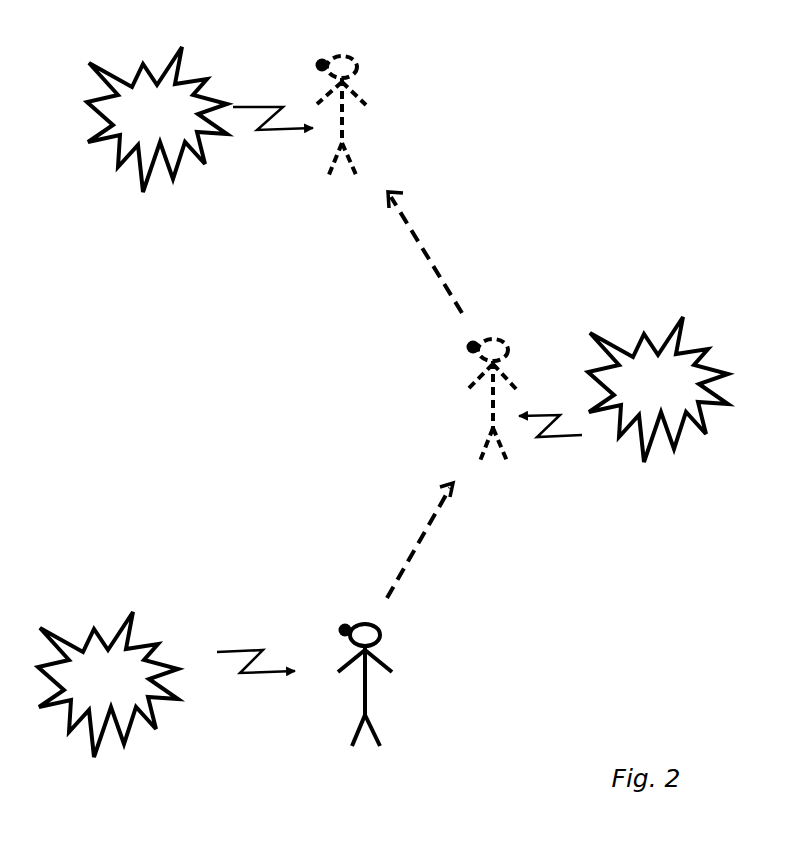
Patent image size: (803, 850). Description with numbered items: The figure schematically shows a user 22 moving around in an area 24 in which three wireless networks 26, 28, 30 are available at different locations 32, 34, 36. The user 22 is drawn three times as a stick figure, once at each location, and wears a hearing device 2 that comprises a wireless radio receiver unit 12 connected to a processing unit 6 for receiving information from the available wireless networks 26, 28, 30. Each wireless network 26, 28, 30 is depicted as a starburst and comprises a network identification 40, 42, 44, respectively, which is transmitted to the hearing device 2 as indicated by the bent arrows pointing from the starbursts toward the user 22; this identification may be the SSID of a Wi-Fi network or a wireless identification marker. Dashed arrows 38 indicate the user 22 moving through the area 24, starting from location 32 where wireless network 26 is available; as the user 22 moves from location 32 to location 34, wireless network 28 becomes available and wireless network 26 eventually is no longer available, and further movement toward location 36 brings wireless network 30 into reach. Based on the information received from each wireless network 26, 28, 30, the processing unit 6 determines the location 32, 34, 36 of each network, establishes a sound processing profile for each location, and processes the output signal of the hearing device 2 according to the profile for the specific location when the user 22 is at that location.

The hearing device 2 is at (373, 318).
The processing unit 6 is at (373, 318).
The wireless radio receiver unit 12 is at (373, 318).
The user 22 is at (430, 400).
The area 24 is at (603, 16).
The wireless network 26 is at (108, 684).
The wireless network 28 is at (658, 389).
The wireless network 30 is at (157, 119).
The location 32 is at (196, 768).
The location 34 is at (569, 522).
The location 36 is at (222, 228).
The dashed arrows 38 is at (422, 393).
The network identification 40 is at (108, 684).
The network identification 42 is at (658, 389).
The network identification 44 is at (157, 119).